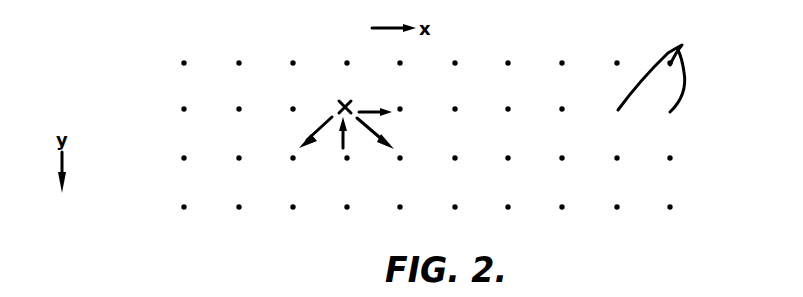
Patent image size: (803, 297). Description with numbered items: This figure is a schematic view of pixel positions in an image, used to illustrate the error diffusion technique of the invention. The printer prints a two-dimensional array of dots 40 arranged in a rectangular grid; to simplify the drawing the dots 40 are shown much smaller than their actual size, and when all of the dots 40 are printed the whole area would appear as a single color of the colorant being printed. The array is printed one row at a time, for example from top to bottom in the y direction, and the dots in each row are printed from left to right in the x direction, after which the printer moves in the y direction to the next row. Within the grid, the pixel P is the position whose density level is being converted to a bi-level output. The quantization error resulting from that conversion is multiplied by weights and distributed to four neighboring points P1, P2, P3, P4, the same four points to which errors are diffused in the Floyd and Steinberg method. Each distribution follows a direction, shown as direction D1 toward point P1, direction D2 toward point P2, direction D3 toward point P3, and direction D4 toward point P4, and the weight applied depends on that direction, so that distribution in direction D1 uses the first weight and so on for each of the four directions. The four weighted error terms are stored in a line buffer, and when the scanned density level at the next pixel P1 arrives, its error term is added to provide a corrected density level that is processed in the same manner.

The dots 40 is at (663, 74).
The pixel P is at (343, 100).
The point P1 is at (402, 109).
The point P2 is at (402, 159).
The point P3 is at (346, 159).
The point P4 is at (295, 159).
The direction D1 is at (365, 108).
The direction D2 is at (372, 126).
The direction D3 is at (340, 137).
The direction D4 is at (320, 118).